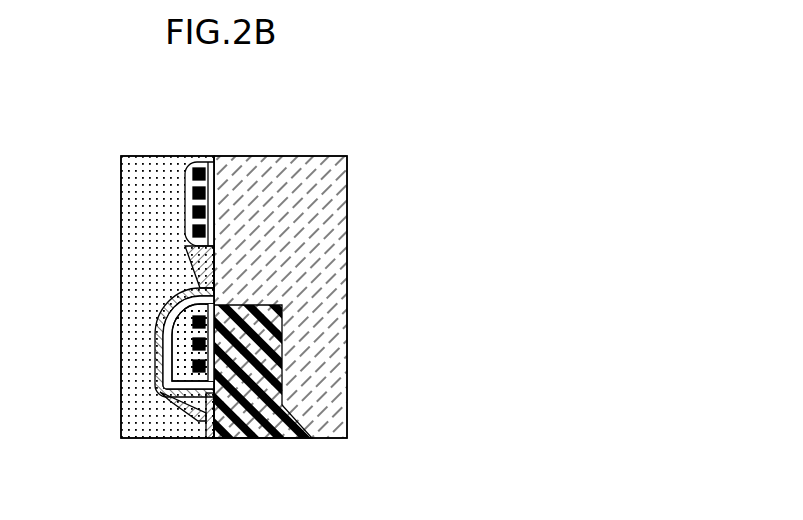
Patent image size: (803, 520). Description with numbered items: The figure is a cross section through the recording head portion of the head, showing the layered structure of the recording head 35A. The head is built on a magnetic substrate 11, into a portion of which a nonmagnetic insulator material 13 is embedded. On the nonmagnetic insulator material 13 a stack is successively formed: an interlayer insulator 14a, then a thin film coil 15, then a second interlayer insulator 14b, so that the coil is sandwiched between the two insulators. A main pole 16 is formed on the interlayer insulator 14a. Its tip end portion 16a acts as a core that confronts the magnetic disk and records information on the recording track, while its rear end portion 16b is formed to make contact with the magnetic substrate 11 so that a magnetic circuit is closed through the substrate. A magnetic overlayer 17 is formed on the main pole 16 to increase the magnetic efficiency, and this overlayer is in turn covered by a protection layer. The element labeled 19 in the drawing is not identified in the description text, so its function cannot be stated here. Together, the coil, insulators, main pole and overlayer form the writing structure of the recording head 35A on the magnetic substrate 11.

The recording head 35A is at (353, 104).
The main pole 16 is at (160, 156).
The tip end portion 16a is at (203, 427).
The rear end portion 16b is at (186, 266).
The magnetic substrate 11 is at (347, 250).
The nonmagnetic insulator material 13 is at (283, 370).
The interlayer insulator 14a is at (190, 393).
The interlayer insulator 14b is at (157, 337).
The thin film coil 15 is at (168, 319).
The magnetic overlayer 17 is at (182, 348).
The sidewall insulating film 19 is at (196, 438).